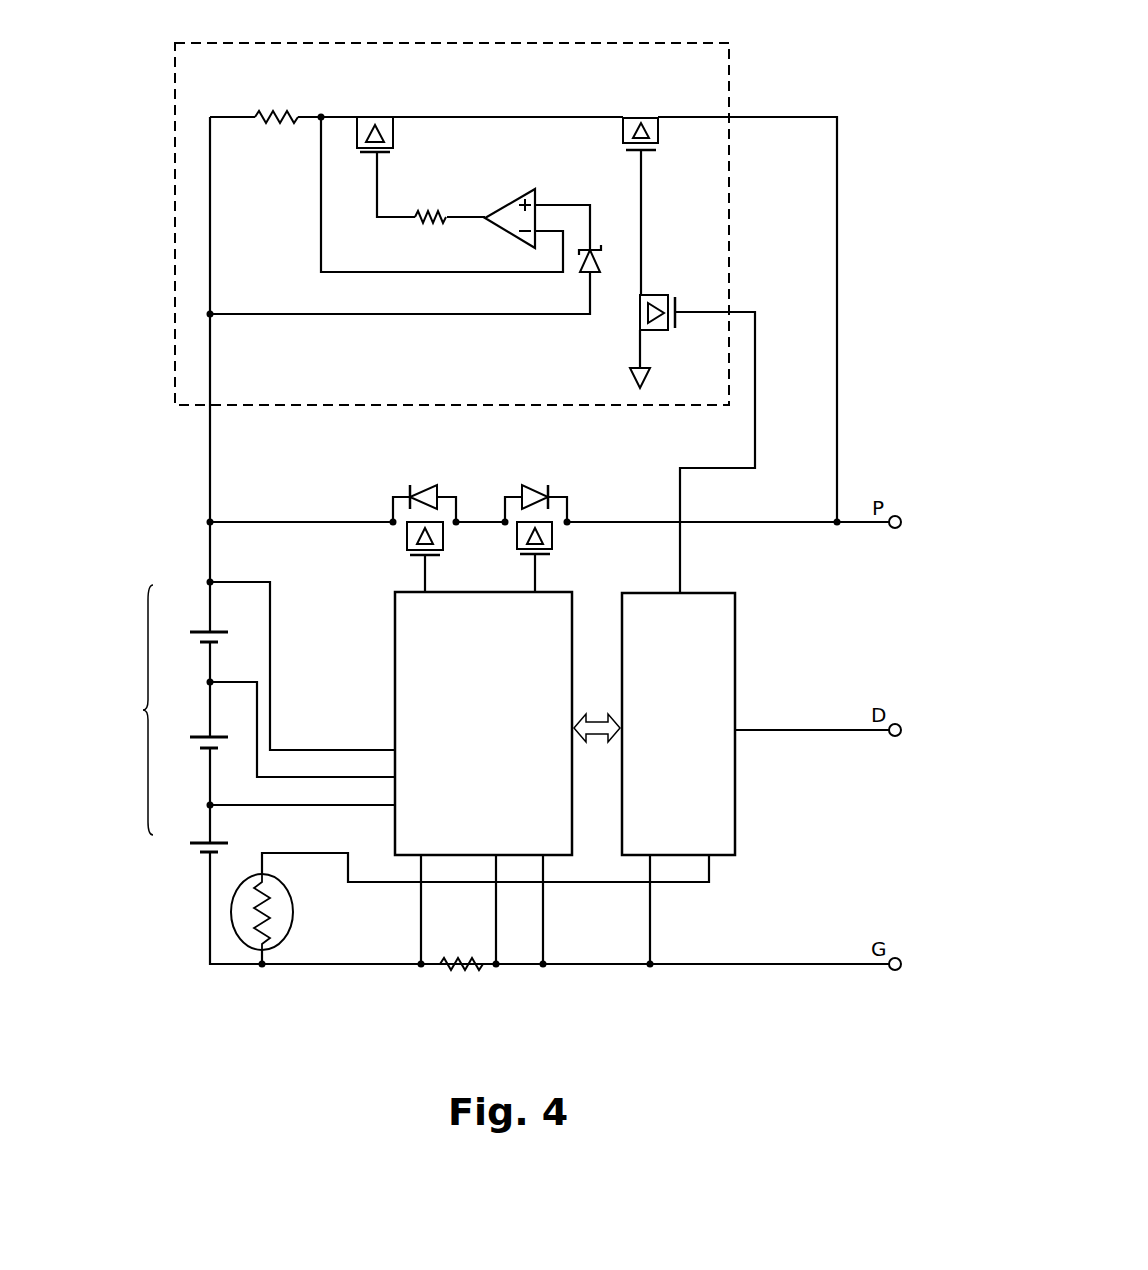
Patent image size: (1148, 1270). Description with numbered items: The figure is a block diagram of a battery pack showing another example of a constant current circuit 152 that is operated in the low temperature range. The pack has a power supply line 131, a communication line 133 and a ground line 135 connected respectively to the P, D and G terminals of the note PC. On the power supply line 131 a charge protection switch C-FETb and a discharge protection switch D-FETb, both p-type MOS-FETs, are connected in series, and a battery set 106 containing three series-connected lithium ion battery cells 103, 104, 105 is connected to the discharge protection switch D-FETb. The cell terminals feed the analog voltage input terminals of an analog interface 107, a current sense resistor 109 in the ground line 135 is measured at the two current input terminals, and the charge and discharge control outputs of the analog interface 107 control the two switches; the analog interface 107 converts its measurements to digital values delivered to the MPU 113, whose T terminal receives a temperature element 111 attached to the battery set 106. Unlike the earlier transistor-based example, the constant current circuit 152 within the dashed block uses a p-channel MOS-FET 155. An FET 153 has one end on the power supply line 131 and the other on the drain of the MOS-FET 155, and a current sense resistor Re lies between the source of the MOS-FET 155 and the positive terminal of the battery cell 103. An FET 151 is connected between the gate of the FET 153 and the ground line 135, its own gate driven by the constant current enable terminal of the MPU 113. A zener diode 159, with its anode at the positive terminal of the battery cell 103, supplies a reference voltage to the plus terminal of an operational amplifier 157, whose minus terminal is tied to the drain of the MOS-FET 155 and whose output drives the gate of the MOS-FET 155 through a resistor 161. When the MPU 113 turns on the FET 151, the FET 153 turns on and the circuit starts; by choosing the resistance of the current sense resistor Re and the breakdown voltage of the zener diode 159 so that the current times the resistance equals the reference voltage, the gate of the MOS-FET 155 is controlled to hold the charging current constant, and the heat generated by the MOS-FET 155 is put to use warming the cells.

The battery cell 103 is at (200, 632).
The battery cell 104 is at (200, 737).
The battery cell 105 is at (200, 843).
The battery set 106 is at (125, 710).
The analog interface 107 is at (565, 592).
The current sense resistor 109 is at (456, 970).
The constant current circuit 111 is at (294, 912).
The MPU 113 is at (722, 593).
The power supply line 131 is at (760, 522).
The communication line 133 is at (800, 730).
The ground line 135 is at (798, 963).
The FET 151 is at (660, 297).
The constant current circuit 152 is at (560, 43).
The FET 153 is at (656, 152).
The p-channel MOS-FET 155 is at (368, 117).
The operational amplifier 157 is at (532, 189).
The zener diode 159 is at (595, 252).
The resistor 161 is at (440, 217).
The current sense resistor Re is at (280, 117).
The discharge protection switch D-FETb is at (428, 485).
The charge protection switch C-FETb is at (550, 465).